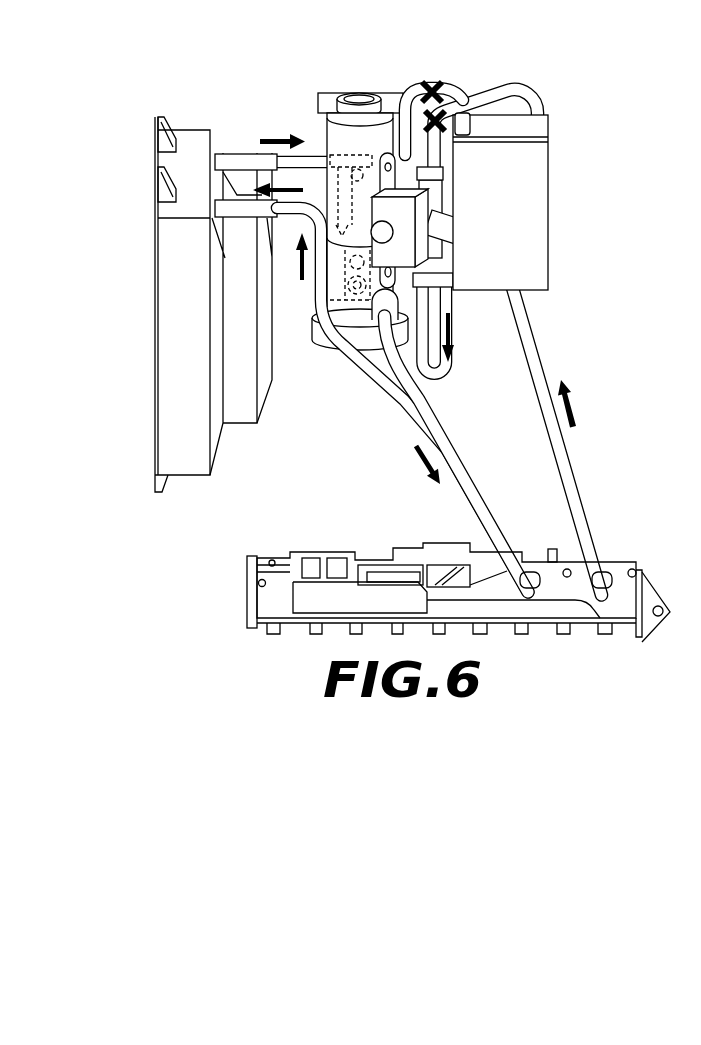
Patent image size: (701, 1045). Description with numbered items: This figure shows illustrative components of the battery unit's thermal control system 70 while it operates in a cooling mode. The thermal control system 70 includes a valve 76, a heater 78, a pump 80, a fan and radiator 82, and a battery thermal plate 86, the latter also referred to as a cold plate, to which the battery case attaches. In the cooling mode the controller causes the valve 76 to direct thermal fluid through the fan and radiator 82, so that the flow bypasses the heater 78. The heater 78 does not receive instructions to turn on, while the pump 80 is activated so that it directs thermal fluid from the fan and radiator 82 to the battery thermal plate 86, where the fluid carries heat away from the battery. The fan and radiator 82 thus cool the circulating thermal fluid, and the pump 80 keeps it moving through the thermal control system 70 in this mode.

The thermal control system 70 is at (567, 79).
The valve 76 is at (433, 275).
The heater 78 is at (530, 197).
The pump 80 is at (350, 352).
The fan and radiator 82 is at (163, 323).
The battery thermal plate 86 is at (621, 570).